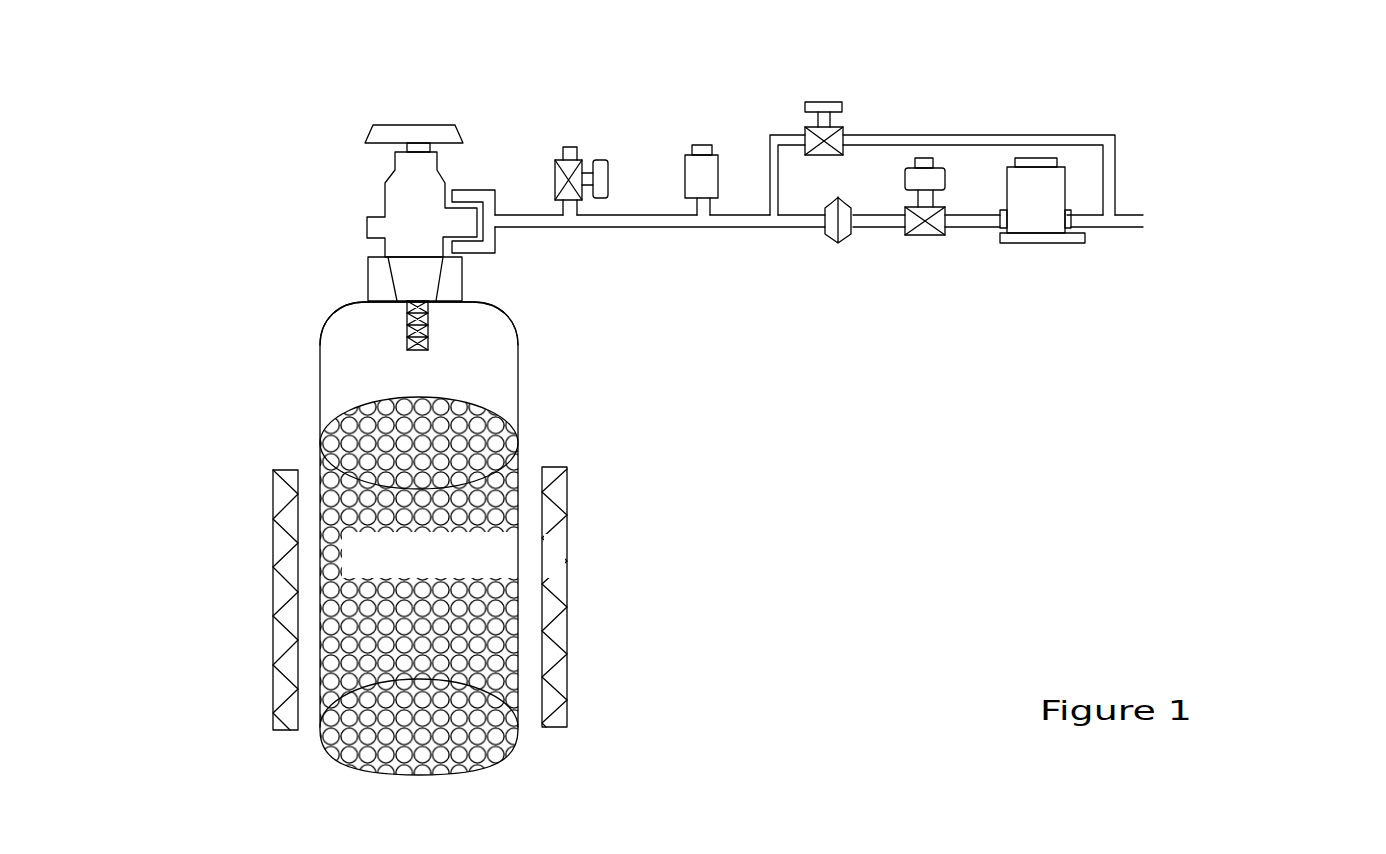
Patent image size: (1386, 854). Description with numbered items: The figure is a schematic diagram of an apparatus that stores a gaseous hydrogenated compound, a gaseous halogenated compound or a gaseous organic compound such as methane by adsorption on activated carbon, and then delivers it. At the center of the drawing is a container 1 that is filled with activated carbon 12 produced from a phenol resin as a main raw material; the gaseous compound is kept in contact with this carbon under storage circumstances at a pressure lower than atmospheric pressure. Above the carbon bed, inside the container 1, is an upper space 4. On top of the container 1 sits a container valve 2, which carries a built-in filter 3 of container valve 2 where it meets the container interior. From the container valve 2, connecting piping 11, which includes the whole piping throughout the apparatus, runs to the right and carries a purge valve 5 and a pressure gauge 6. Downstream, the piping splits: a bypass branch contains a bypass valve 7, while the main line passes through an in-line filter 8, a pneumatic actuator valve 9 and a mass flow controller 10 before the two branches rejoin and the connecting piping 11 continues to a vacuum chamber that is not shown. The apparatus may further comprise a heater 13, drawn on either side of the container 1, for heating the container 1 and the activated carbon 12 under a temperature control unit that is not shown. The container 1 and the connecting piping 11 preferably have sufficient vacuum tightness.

The container 1 is at (534, 538).
The container valve 2 is at (362, 175).
The built-in filter of container valve 3 is at (396, 316).
The upper space 4 is at (315, 313).
The purge valve 5 is at (565, 144).
The pressure gauge 6 is at (682, 110).
The bypass valve 7 is at (852, 100).
The in-line filter 8 is at (816, 231).
The pneumatic actuator valve 9 is at (917, 254).
The mass flow controller 10 is at (1028, 267).
The connecting piping 11 is at (967, 123).
The activated carbon 12 is at (485, 586).
The heater 13 is at (508, 598).